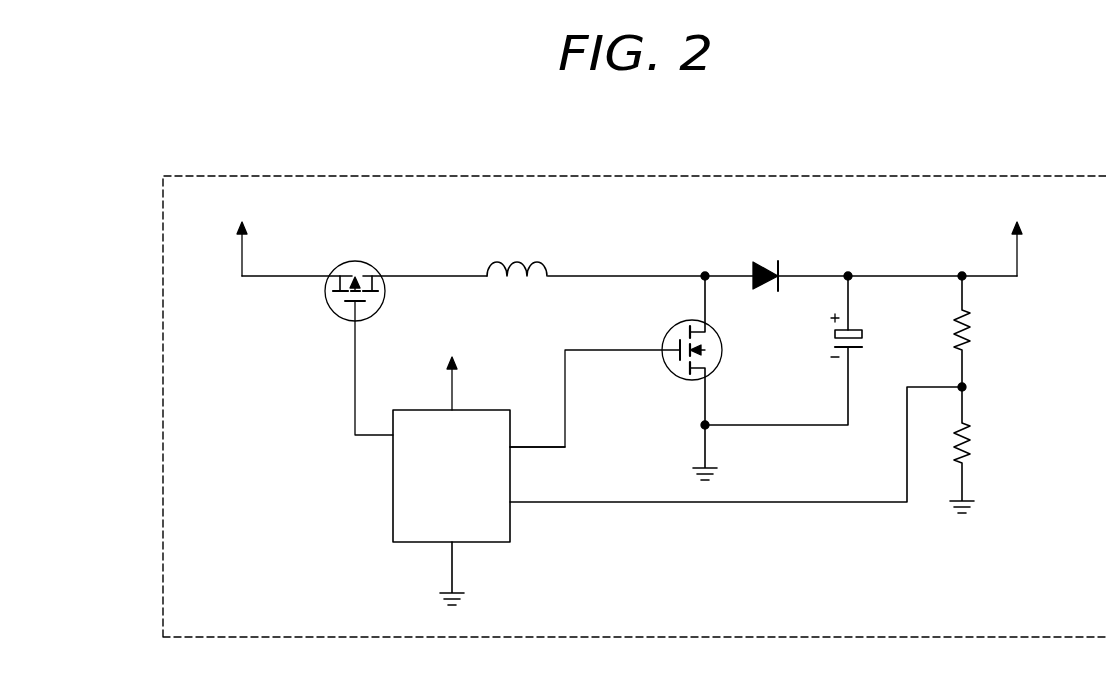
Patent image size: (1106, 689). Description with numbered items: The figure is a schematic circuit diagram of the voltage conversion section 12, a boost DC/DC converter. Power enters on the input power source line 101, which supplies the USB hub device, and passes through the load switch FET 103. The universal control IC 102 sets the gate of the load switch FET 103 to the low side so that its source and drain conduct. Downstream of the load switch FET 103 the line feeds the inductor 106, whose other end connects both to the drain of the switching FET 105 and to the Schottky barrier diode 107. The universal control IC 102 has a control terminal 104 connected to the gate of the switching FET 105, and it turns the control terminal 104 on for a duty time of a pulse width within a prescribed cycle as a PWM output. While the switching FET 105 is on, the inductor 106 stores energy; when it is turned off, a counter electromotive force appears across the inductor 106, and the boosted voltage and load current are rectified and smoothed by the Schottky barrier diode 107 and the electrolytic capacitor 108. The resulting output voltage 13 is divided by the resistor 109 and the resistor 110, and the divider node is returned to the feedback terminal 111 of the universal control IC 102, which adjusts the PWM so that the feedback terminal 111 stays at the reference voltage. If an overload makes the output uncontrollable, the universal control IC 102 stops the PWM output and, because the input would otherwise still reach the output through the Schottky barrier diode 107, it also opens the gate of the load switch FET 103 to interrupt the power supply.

The voltage conversion section 2 12 is at (922, 176).
The output voltage 13 is at (1020, 264).
The input power source line 101 is at (290, 274).
The universal control IC 102 is at (466, 409).
The load switch FET 103 is at (370, 263).
The control terminal 104 is at (512, 447).
The switching FET 105 is at (723, 350).
The inductor 106 is at (540, 247).
The Schottky barrier diode 107 is at (761, 263).
The electrolytic capacitor 108 is at (866, 335).
The resistor 109 is at (974, 323).
The resistor 110 is at (974, 437).
The feedback terminal 111 is at (512, 502).